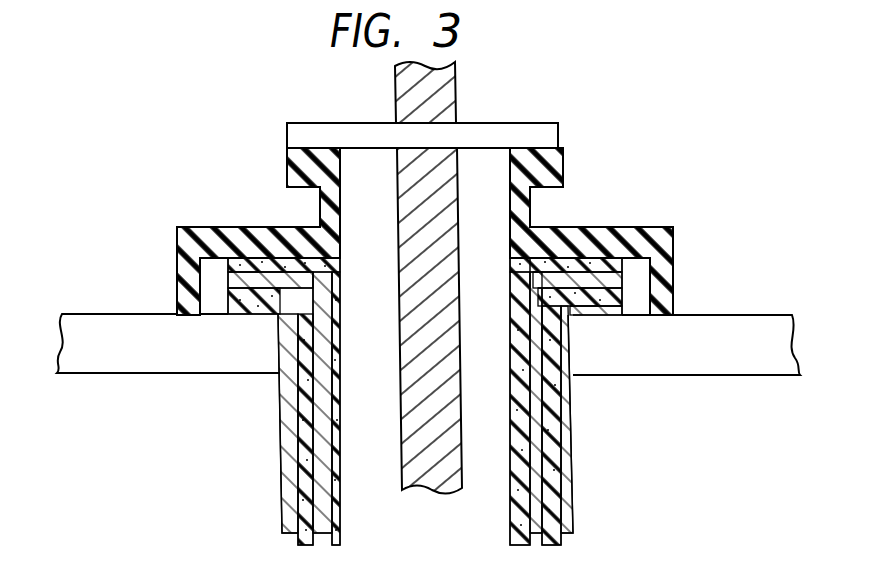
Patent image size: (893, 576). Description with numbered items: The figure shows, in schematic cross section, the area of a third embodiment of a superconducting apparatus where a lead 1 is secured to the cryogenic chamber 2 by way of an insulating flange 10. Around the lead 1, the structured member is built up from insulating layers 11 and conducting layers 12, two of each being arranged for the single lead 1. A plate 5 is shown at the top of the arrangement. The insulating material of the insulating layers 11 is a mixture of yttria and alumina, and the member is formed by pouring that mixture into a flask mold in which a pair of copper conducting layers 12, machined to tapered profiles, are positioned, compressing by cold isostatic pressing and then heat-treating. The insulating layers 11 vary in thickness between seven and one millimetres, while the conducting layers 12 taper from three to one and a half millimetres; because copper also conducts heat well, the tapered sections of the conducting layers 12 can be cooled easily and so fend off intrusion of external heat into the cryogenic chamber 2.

The lead 1 is at (451, 88).
The cryogenic chamber 2 is at (772, 325).
The cover plate 5 is at (556, 132).
The insulating flange 10 is at (661, 245).
The insulating layer 11 is at (561, 500).
The conducting layer 12 is at (569, 456).